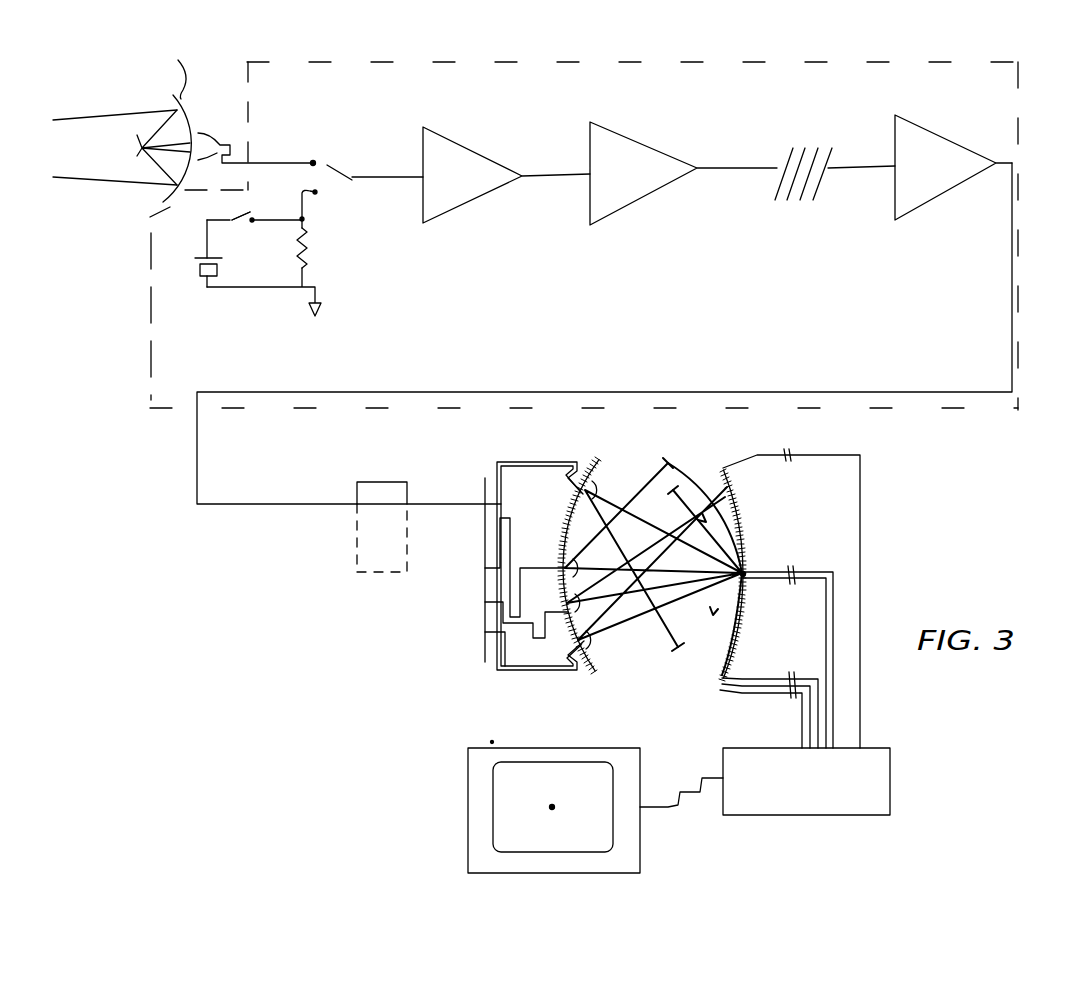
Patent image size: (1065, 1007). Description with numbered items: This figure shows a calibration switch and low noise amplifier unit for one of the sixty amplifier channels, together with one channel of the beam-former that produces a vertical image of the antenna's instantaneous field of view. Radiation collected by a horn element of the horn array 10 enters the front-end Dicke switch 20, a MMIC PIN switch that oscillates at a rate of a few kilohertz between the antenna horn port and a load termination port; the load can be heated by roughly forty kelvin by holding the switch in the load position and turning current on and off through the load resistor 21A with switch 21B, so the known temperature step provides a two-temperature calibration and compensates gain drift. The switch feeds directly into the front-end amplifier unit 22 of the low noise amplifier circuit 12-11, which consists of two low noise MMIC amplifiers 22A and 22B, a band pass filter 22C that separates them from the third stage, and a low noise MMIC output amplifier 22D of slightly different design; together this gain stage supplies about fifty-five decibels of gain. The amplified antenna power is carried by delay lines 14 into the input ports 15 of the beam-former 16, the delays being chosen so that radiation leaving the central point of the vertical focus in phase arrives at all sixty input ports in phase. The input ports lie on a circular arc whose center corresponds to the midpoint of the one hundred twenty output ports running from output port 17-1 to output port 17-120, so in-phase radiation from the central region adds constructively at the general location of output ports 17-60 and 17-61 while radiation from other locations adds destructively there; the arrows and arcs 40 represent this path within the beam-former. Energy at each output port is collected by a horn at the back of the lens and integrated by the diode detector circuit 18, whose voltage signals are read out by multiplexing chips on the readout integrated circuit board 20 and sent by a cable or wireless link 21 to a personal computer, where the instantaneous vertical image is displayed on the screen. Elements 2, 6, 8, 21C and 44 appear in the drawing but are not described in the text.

The horn antenna 2 is at (150, 75).
The antenna aperture / radome 6 is at (179, 66).
The incoming signal 8 is at (124, 150).
The horn array 10 is at (217, 118).
The low noise amplifier circuit 12-11 is at (537, 351).
The delay lines 14 is at (533, 467).
The input ports 15 is at (620, 449).
The beam-former 16 is at (668, 668).
The output port 17-1 is at (749, 477).
The output port 17-60 is at (763, 565).
The output port 17-61 is at (761, 583).
The output port 17-120 is at (729, 688).
The diode detector circuit 18 is at (801, 566).
The Dicke switch 20 is at (352, 146).
The link 21 is at (454, 498).
The load resistor 21A is at (318, 247).
The switch 21B is at (245, 229).
The capacitor 21C is at (228, 269).
The front-end amplifier unit 22 is at (741, 69).
The low noise MMIC amplifier 22A is at (467, 142).
The low noise MMIC amplifier 22B is at (643, 142).
The band pass filter 22C is at (808, 129).
The low noise MMIC output amplifier 22D is at (923, 127).
The arrows and arcs 40 is at (766, 573).
The adjustable delay module 44 is at (349, 544).